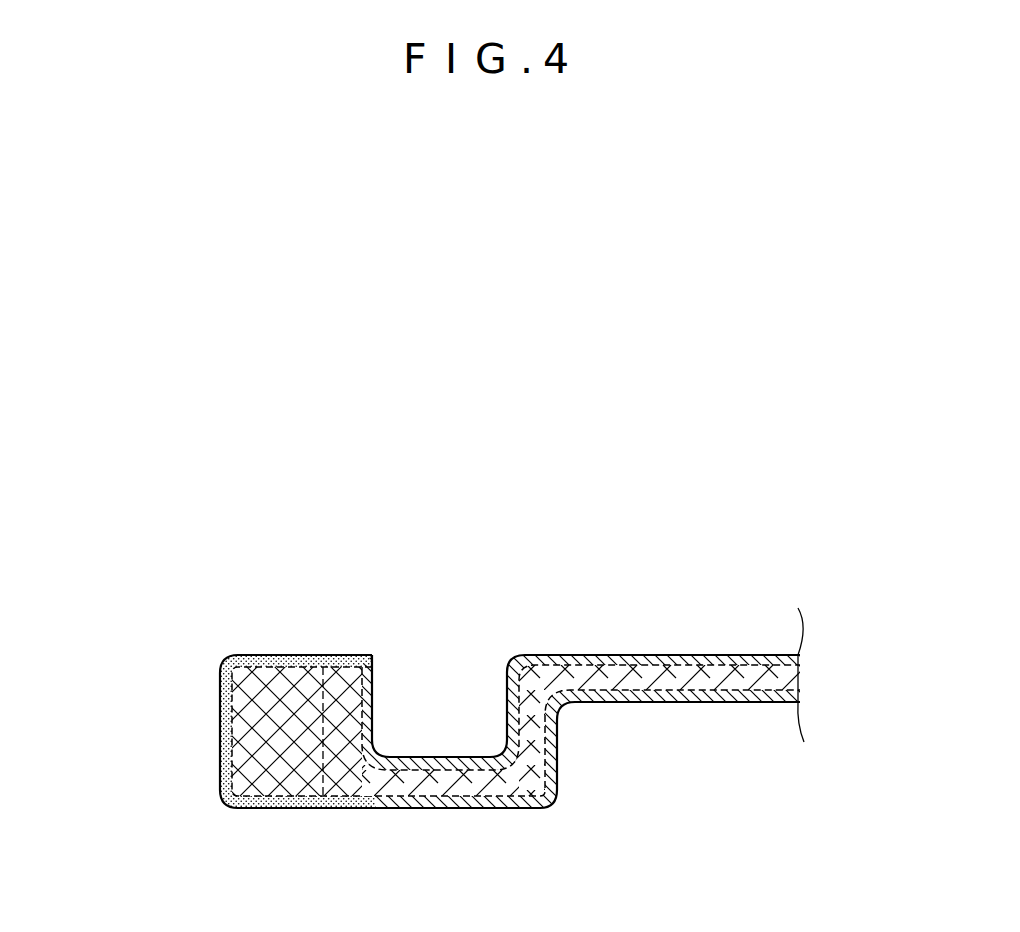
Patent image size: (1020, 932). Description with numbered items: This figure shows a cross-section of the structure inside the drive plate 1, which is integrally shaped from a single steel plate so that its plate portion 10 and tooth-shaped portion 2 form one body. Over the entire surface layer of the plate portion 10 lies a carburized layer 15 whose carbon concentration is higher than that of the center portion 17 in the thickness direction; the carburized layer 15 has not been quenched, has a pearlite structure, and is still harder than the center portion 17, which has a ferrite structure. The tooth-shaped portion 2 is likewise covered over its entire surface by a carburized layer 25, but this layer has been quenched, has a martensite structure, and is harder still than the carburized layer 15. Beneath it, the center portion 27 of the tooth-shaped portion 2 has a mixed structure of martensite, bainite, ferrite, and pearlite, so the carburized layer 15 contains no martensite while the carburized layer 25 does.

The drive plate 1 is at (428, 684).
The tooth-shaped portion 2 is at (247, 727).
The plate portion 10 is at (583, 705).
The carburized layer 15 is at (659, 652).
The center portion 17 is at (683, 677).
The carburized layer 25 is at (217, 770).
The center portion 27 is at (280, 743).